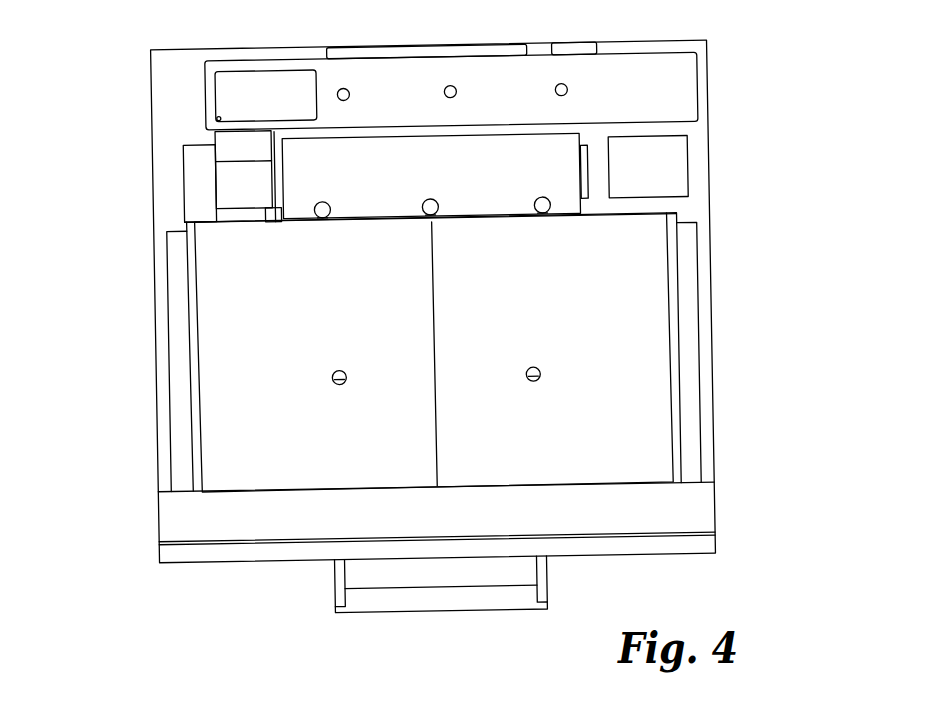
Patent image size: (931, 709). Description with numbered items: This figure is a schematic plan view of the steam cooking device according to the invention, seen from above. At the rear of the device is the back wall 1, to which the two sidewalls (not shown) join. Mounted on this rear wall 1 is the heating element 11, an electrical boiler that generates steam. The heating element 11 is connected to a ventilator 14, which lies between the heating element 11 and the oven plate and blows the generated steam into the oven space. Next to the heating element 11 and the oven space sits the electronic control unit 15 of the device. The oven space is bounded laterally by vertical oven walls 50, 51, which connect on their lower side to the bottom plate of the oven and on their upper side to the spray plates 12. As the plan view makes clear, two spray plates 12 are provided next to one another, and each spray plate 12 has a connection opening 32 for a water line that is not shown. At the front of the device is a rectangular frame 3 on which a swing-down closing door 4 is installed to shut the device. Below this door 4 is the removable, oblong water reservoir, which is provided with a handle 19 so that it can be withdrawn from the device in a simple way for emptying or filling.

The back wall 1 is at (273, 47).
The heating element 11 is at (597, 83).
The ventilator 14 is at (316, 184).
The electronic control unit 15 is at (647, 168).
The oven wall 51 is at (177, 332).
The oven wall 50 is at (692, 285).
The spray plate 12 is at (635, 342).
The connection opening 32 is at (540, 373).
The rectangular frame 3 is at (663, 507).
The closing door 4 is at (627, 540).
The handle 19 is at (423, 602).